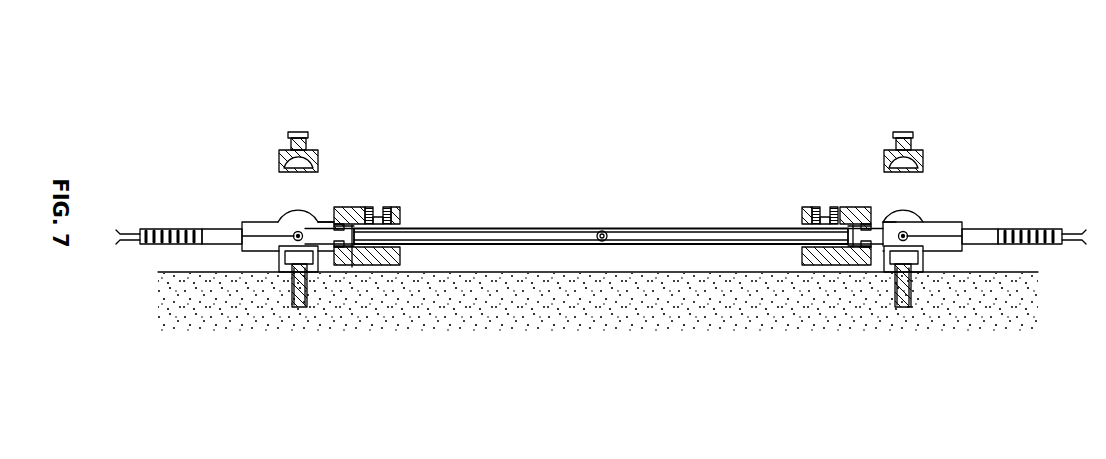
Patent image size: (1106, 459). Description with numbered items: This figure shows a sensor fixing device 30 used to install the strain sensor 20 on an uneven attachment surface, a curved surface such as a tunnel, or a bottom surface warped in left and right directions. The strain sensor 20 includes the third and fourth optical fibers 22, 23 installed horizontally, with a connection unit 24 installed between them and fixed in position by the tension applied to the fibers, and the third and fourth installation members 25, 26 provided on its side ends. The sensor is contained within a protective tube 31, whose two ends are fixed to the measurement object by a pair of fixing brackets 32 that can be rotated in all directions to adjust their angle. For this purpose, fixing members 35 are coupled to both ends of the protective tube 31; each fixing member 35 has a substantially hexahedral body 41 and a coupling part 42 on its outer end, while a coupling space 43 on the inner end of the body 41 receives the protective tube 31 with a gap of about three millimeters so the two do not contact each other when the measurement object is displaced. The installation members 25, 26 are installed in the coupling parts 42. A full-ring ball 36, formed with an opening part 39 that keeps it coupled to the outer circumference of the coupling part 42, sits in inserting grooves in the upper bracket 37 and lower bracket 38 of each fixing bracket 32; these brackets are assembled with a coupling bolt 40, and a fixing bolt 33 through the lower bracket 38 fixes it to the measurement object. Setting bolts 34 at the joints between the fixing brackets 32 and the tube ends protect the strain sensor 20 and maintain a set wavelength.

The strain sensor 20 is at (678, 222).
The third optical fiber 22 is at (650, 228).
The fourth optical fiber 23 is at (557, 229).
The connection unit 24 is at (600, 231).
The third installation member 25 is at (930, 221).
The fourth installation member 26 is at (292, 236).
The sensor fixing device 30 is at (665, 86).
The protective tube 31 is at (747, 227).
The fixing bracket 32 is at (193, 58).
The fixing bolt 33 is at (307, 309).
The setting bolt 34 is at (400, 210).
The fixing member 35 is at (383, 58).
The ball 36 is at (327, 215).
The upper bracket 37 is at (286, 142).
The lower bracket 38 is at (280, 266).
The opening part 39 is at (292, 254).
The coupling bolt 40 is at (300, 132).
The body 41 is at (368, 208).
The coupling part 42 is at (337, 208).
The coupling space 43 is at (352, 262).